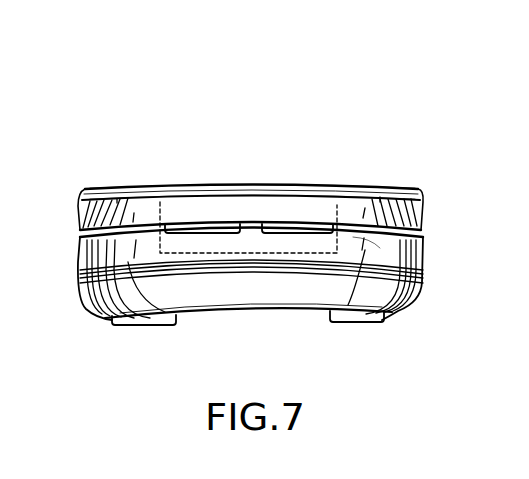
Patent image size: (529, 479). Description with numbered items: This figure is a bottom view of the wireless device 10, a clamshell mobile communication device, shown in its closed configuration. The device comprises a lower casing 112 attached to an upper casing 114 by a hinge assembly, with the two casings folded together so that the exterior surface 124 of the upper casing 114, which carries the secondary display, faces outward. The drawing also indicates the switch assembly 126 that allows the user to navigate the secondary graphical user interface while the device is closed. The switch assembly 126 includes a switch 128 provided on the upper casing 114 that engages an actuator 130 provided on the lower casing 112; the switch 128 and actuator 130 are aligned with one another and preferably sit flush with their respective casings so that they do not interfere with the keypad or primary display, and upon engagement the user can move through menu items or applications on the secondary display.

The wireless device 10 is at (262, 208).
The lower casing 112 is at (97, 333).
The upper casing 114 is at (427, 190).
The exterior surface 124 is at (236, 190).
The switch assembly 126 is at (353, 237).
The switch 128 is at (335, 197).
The actuator 130 is at (337, 253).